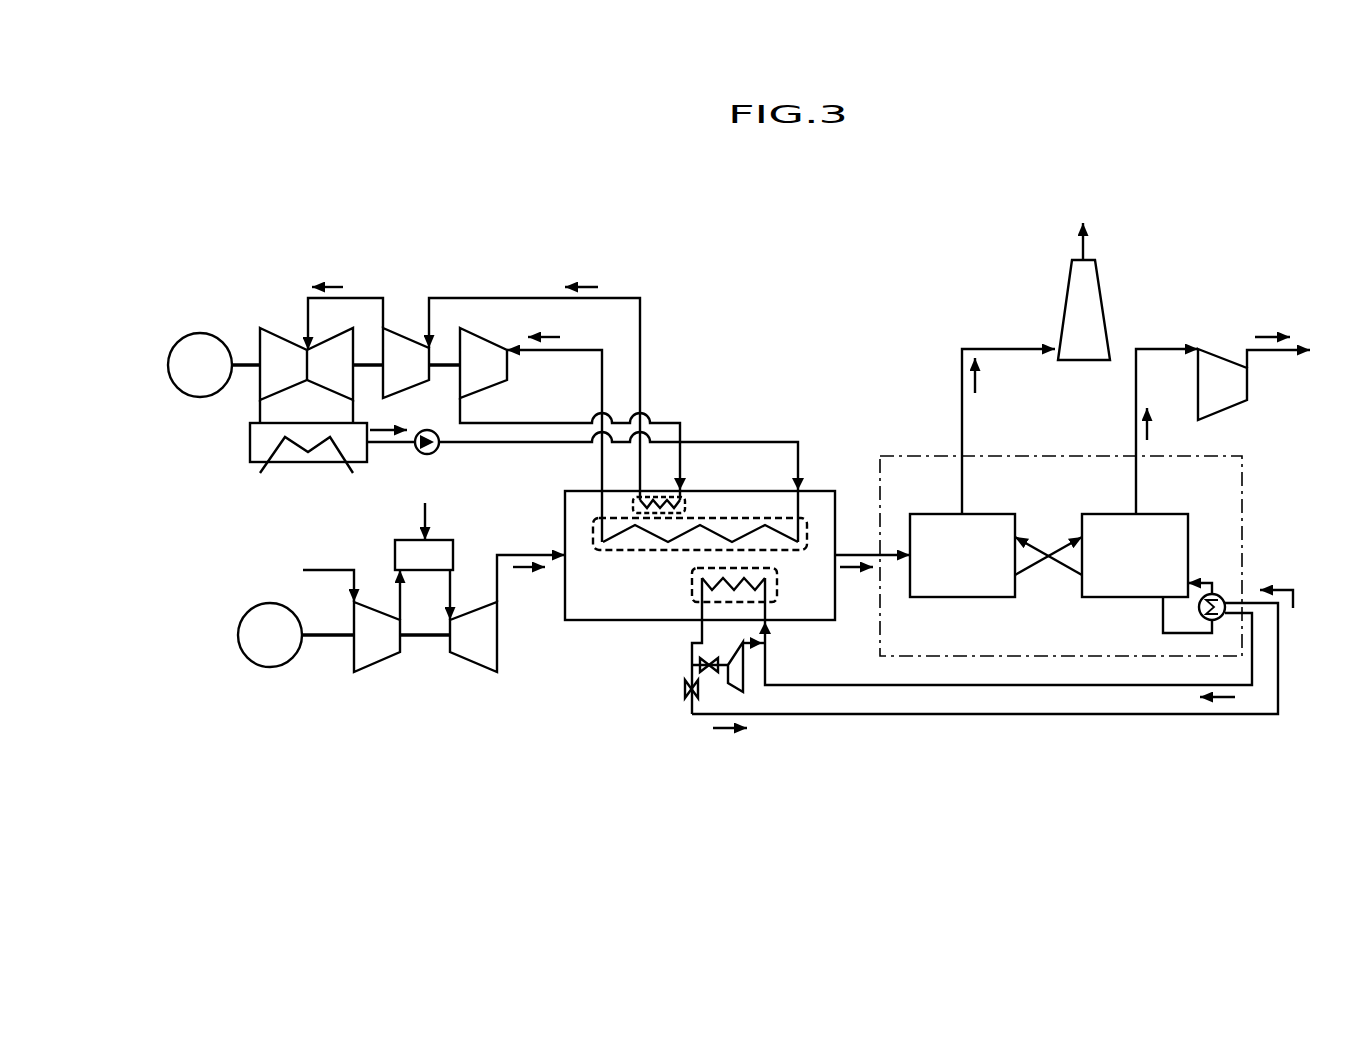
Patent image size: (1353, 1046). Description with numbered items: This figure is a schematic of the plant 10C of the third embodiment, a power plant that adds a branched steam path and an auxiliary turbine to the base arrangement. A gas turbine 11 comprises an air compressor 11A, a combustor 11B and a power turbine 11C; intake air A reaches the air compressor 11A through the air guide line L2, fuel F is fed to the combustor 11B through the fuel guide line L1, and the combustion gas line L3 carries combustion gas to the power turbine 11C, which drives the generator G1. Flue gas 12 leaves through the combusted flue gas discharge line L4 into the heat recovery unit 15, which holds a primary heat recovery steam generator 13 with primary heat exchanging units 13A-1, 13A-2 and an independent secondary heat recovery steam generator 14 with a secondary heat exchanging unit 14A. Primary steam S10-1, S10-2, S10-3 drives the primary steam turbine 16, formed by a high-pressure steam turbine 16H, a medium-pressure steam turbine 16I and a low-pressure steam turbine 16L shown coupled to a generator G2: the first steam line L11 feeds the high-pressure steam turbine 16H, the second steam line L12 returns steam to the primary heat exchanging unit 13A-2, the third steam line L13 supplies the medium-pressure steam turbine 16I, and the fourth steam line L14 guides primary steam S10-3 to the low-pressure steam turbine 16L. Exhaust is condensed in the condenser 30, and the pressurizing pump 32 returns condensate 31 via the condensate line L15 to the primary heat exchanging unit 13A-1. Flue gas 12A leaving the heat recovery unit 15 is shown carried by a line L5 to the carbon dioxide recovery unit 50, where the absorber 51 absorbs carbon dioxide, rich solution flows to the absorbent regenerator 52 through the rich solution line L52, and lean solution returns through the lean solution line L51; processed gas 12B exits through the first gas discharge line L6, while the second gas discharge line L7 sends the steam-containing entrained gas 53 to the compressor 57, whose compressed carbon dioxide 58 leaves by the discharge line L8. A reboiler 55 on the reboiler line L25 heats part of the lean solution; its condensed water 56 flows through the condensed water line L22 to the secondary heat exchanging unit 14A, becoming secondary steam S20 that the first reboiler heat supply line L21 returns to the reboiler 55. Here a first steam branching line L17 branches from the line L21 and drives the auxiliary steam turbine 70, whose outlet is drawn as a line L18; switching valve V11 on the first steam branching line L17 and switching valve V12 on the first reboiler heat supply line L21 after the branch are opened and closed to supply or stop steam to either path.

The plant 10C is at (848, 262).
The gas turbine 11 is at (335, 743).
The air compressor 11A is at (378, 663).
The combustor 11B is at (425, 572).
The power turbine 11C is at (468, 663).
The flue gas 12 is at (522, 572).
The flue gas 12A is at (855, 570).
The processed gas 12B is at (1087, 245).
The primary heat recovery steam generator 13 is at (697, 500).
The primary heat exchanging unit 13A-1 is at (757, 500).
The primary heat exchanging unit 13A-2 is at (663, 493).
The secondary heat recovery steam generator 14 is at (697, 603).
The secondary heat exchanging unit 14A is at (720, 603).
The heat recovery unit 15 is at (575, 622).
The primary steam turbine 16 is at (368, 224).
The low-pressure steam turbine 16L is at (337, 333).
The medium-pressure steam turbine 16I is at (405, 335).
The high-pressure steam turbine 16H is at (482, 333).
The condenser 30 is at (250, 443).
The condensate 31 is at (393, 430).
The pressurizing pump 32 is at (440, 450).
The CO2 recovery unit 50 is at (1242, 472).
The CO2 absorber 51 is at (977, 512).
The absorbent regenerator 52 is at (1150, 512).
The CO2 entrained gas 53 is at (1152, 433).
The reboiler 55 is at (1223, 602).
The condensed water 56 is at (1228, 703).
The CO2 compressor 57 is at (1222, 357).
The compressed CO2 58 is at (1272, 337).
The auxiliary steam turbine 70 is at (738, 678).
The generator G1 is at (270, 635).
The generator G2 is at (200, 365).
The fuel guide line L1 is at (427, 513).
The air guide line L2 is at (327, 570).
The combustion gas line L3 is at (453, 590).
The combusted flue gas discharge line L4 is at (522, 552).
The exhaust gas line L5 is at (852, 505).
The first gas discharge line L6 is at (1002, 345).
The second gas discharge line L7 is at (1162, 347).
The discharge line L8 is at (1277, 357).
The first steam line L11 is at (603, 363).
The second steam line L12 is at (537, 423).
The third steam line L13 is at (640, 313).
The fourth steam line L14 is at (345, 295).
The condensate line L15 is at (538, 447).
The first steam branching line L17 is at (692, 672).
The turbine exhaust steam line L18 is at (748, 647).
The first reboiler heat supply line L21 is at (828, 717).
The condensed water line L22 is at (945, 687).
The reboiler line L25 is at (1158, 617).
The lean solution line L51 is at (1063, 573).
The rich solution line L52 is at (1060, 547).
The primary steam S10-1 is at (547, 332).
The primary steam S10-2 is at (585, 283).
The primary steam S10-3 is at (327, 283).
The secondary steam S20 is at (727, 737).
The switching valve V11 is at (713, 667).
The switching valve V12 is at (687, 687).